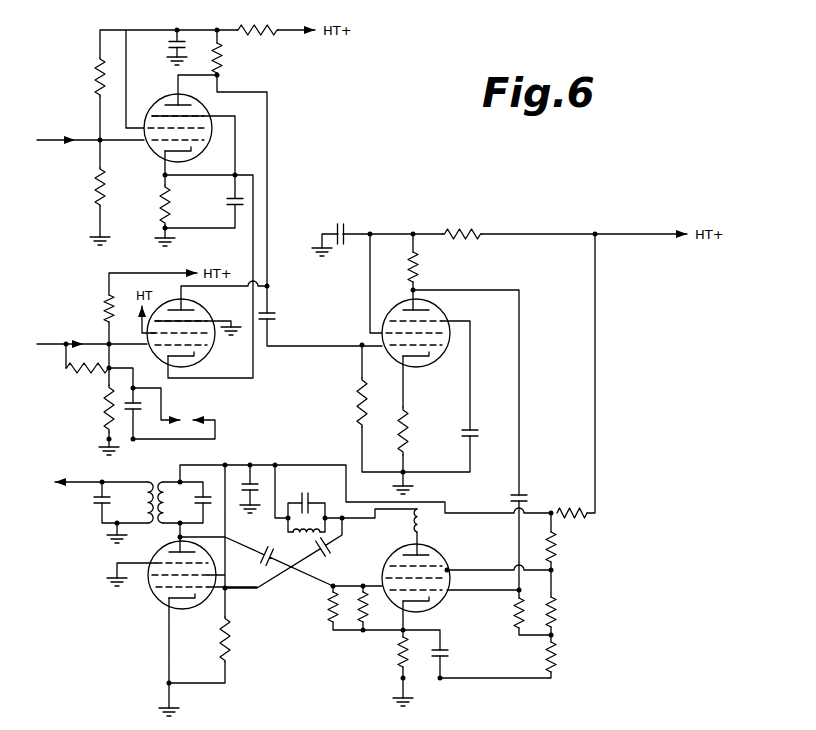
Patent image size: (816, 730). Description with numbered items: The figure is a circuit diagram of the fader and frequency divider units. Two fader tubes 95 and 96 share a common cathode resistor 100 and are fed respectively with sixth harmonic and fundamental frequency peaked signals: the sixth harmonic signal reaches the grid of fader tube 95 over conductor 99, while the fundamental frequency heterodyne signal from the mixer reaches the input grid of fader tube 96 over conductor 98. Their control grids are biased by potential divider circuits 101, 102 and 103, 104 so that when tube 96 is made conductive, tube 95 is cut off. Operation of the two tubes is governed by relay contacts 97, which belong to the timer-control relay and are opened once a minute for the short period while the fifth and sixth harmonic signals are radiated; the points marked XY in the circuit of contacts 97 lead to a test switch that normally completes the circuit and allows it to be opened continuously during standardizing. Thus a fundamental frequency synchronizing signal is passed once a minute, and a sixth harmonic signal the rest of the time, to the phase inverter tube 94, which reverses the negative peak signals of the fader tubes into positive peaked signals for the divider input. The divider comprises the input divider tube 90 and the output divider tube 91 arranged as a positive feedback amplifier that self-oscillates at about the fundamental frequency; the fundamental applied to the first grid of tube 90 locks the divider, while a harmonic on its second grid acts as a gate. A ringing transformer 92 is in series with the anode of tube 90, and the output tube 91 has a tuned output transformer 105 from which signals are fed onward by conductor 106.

The input divider tube 90 is at (446, 554).
The output divider tube 91 is at (150, 594).
The ringing transformer 92 is at (410, 520).
The phase inverter tube 94 is at (438, 305).
The fader tube 95 is at (199, 152).
The fader tube 96 is at (211, 350).
The relay contacts 97 is at (218, 438).
The conductor 98 is at (79, 342).
The conductor 99 is at (76, 141).
The common cathode resistor 100 is at (162, 214).
The potential divider circuit 101 is at (99, 79).
The potential divider circuit 102 is at (103, 174).
The potential divider circuit 103 is at (106, 303).
The potential divider circuit 104 is at (105, 410).
The tuned output transformer 105 is at (158, 481).
The conductor 106 is at (102, 481).